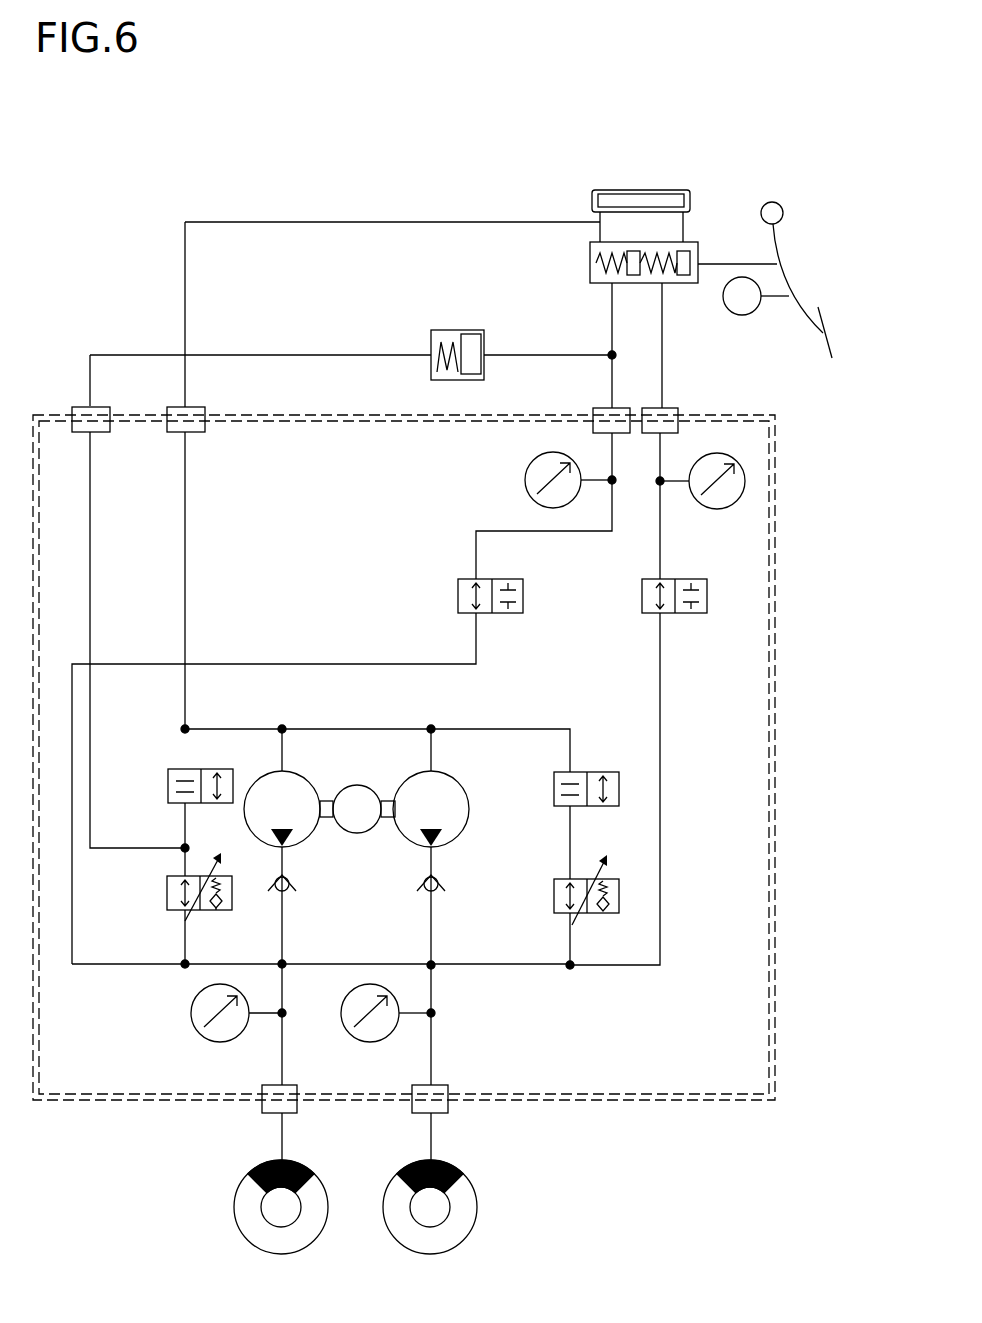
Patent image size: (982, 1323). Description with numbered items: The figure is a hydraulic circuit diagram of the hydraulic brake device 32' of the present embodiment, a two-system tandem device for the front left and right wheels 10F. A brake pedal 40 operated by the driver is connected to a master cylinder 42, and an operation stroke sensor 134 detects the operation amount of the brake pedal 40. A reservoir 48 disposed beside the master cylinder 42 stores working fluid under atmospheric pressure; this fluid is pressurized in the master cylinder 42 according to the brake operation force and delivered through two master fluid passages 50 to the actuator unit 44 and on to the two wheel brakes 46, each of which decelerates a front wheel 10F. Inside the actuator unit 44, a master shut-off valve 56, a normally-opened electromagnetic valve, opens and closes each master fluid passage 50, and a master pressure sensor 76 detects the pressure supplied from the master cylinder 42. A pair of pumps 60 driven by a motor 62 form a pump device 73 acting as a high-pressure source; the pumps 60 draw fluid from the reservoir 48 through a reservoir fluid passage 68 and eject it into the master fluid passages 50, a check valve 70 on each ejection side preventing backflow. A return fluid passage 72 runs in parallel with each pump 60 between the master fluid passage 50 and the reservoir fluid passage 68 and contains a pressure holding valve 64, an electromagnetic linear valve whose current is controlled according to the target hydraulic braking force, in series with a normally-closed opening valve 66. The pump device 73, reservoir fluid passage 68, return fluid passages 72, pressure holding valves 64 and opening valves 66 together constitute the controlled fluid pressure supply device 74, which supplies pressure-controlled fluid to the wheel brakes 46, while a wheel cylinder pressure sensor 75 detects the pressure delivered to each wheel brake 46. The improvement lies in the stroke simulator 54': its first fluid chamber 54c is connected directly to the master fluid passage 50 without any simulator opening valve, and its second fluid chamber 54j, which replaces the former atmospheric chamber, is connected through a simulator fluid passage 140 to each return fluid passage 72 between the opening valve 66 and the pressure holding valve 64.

The hydraulic brake device 32' is at (94, 188).
The brake pedal 40 is at (829, 346).
The master cylinder 42 is at (698, 243).
The actuator unit 44 is at (773, 632).
The wheel brake 46 is at (303, 1163).
The reservoir 48 is at (605, 198).
The master fluid passage 50 is at (297, 664).
The stroke simulator 54' is at (433, 334).
The second fluid chamber 54j is at (440, 371).
The first fluid chamber 54c is at (484, 371).
The master shut-off valve 56 is at (518, 578).
The pump 60 is at (304, 776).
The motor 62 is at (358, 834).
The pressure holding valve 64 is at (222, 912).
The opening valve 66 is at (221, 768).
The reservoir fluid passage 68 is at (189, 517).
The check valve 70 is at (290, 890).
The return fluid passage 72 is at (183, 829).
The pump device 73 is at (377, 740).
The controlled fluid pressure supply device 74 is at (347, 690).
The wheel cylinder pressure sensor 75 is at (196, 1035).
The master pressure sensor 76 is at (524, 480).
The operation stroke sensor 134 is at (741, 315).
The simulator fluid passage 140 is at (94, 475).
The front wheel 10F is at (255, 1240).